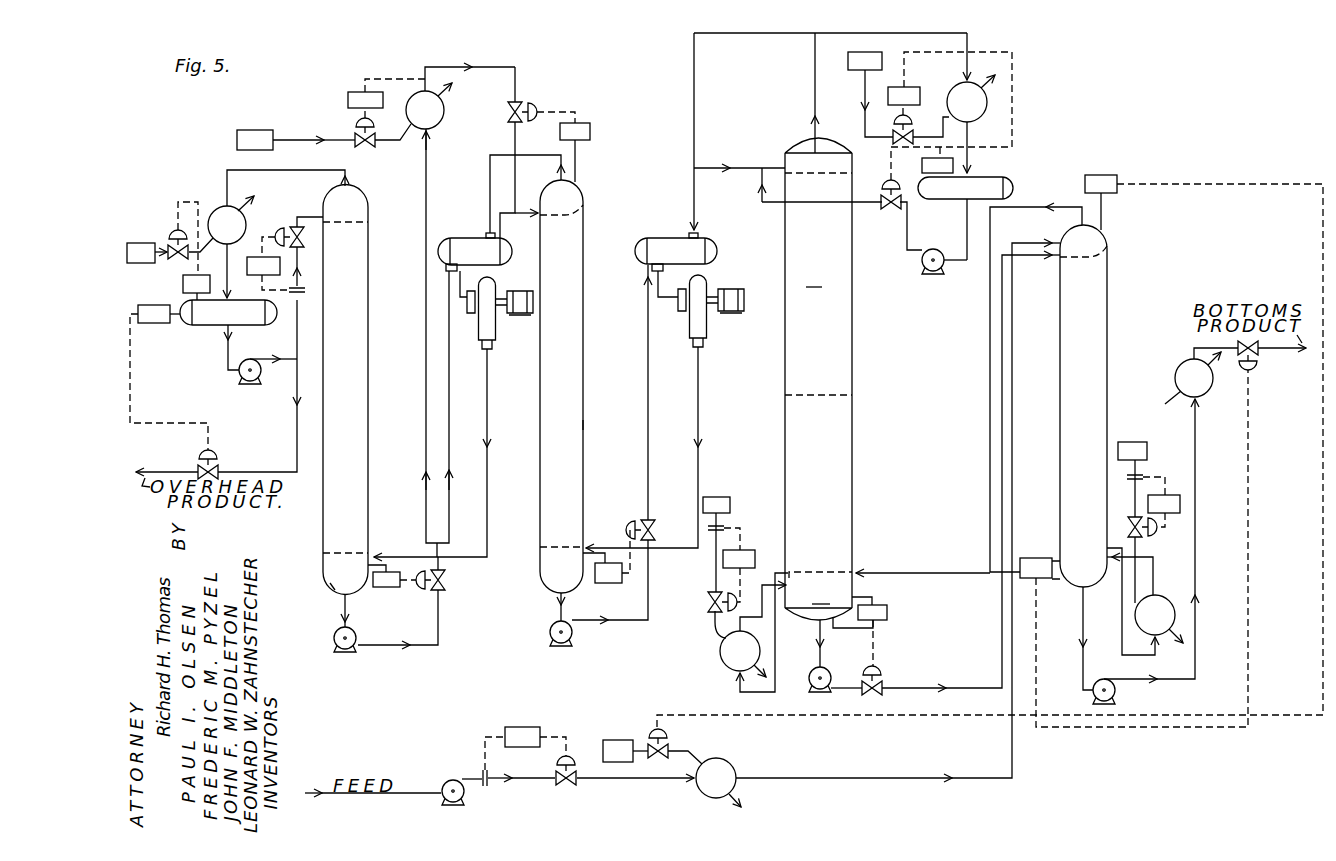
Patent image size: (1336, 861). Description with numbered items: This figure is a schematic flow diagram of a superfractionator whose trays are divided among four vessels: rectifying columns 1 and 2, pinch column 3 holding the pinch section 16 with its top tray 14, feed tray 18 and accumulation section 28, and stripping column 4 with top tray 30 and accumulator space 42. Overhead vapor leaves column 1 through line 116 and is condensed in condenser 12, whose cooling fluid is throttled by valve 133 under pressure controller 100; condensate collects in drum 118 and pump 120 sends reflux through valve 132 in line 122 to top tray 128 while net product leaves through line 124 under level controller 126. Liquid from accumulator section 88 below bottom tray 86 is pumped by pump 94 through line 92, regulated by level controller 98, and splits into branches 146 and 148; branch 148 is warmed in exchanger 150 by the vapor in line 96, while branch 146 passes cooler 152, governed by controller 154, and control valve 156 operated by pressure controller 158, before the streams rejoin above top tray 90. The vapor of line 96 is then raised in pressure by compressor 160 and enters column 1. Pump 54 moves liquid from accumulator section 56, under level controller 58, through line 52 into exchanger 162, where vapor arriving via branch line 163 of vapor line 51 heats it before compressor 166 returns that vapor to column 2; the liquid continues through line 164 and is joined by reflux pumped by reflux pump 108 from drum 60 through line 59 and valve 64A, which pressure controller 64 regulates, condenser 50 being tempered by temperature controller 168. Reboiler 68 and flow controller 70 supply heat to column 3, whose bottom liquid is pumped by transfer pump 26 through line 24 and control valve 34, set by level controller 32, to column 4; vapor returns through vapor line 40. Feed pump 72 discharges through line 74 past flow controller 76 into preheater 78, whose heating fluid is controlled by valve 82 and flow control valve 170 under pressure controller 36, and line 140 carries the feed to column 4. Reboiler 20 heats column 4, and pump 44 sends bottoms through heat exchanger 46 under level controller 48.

The column No. 1 is at (372, 410).
The column No. 2 is at (586, 425).
The pinch column No. 3 is at (856, 392).
The stripping column No. 4 is at (1111, 375).
The overhead product and reflux condenser 12 is at (247, 220).
The top tray 14 is at (803, 173).
The pinch section 16 is at (817, 276).
The feed tray 18 is at (838, 397).
The reboiler 20 is at (1172, 598).
The line 24 is at (1002, 612).
The transfer pump 26 is at (830, 672).
The accumulation section 28 is at (820, 588).
The top tray 30 is at (1108, 245).
The liquid level controller 32 is at (888, 609).
The control valve 34 is at (885, 676).
The pressure controller 36 is at (1118, 174).
The vapor line 40 is at (990, 373).
The accumulator space 42 is at (1080, 585).
The pump 44 is at (1116, 693).
The heat exchanger 46 is at (1203, 393).
The liquid level controller 48 is at (1030, 557).
The condenser 50 is at (985, 112).
The vapor line 51 is at (835, 35).
The line 52 is at (622, 622).
The pump 54 is at (552, 640).
The accumulator section 56 is at (546, 574).
The liquid level controller 58 is at (618, 585).
The line 59 is at (907, 230).
The reflux accumulator drum 60 is at (1013, 182).
The pressure controller 64 is at (923, 166).
The valve 64A is at (891, 210).
The reboiler 68 is at (731, 667).
The flow controller 70 is at (754, 549).
The pump 72 is at (442, 782).
The line 74 is at (608, 781).
The flow controller 76 is at (538, 727).
The preheater 78 is at (731, 765).
The valve 82 is at (615, 738).
The bottom tray 86 is at (360, 552).
The accumulator section 88 is at (332, 583).
The top tray 90 is at (588, 200).
The line 92 is at (390, 646).
The pump 94 is at (336, 645).
The vapor line 96 is at (490, 160).
The liquid level controller 98 is at (394, 587).
The pressure controller 100 is at (183, 285).
The reflux pump 108 is at (922, 266).
The line 116 is at (300, 171).
The accumulator drum 118 is at (211, 320).
The pump 120 is at (243, 380).
The line 122 is at (297, 340).
The line 124 is at (297, 427).
The liquid level controller 126 is at (151, 324).
The top tray 128 is at (361, 225).
The valve 132 is at (307, 217).
The valve 133 is at (176, 238).
The line 140 is at (914, 771).
The branch line 146 is at (426, 466).
The branch line 148 is at (450, 450).
The heat exchanger 150 is at (463, 245).
The cooler 152 is at (446, 112).
The controller 154 is at (348, 100).
The control valve 156 is at (529, 101).
The pressure controller 158 is at (591, 130).
The compressor 160 is at (493, 333).
The heat exchanger 162 is at (667, 247).
The branch line 163 is at (697, 114).
The line 164 is at (748, 157).
The compressor 166 is at (706, 337).
The temperature controller 168 is at (920, 88).
The flow control valve 170 is at (667, 735).